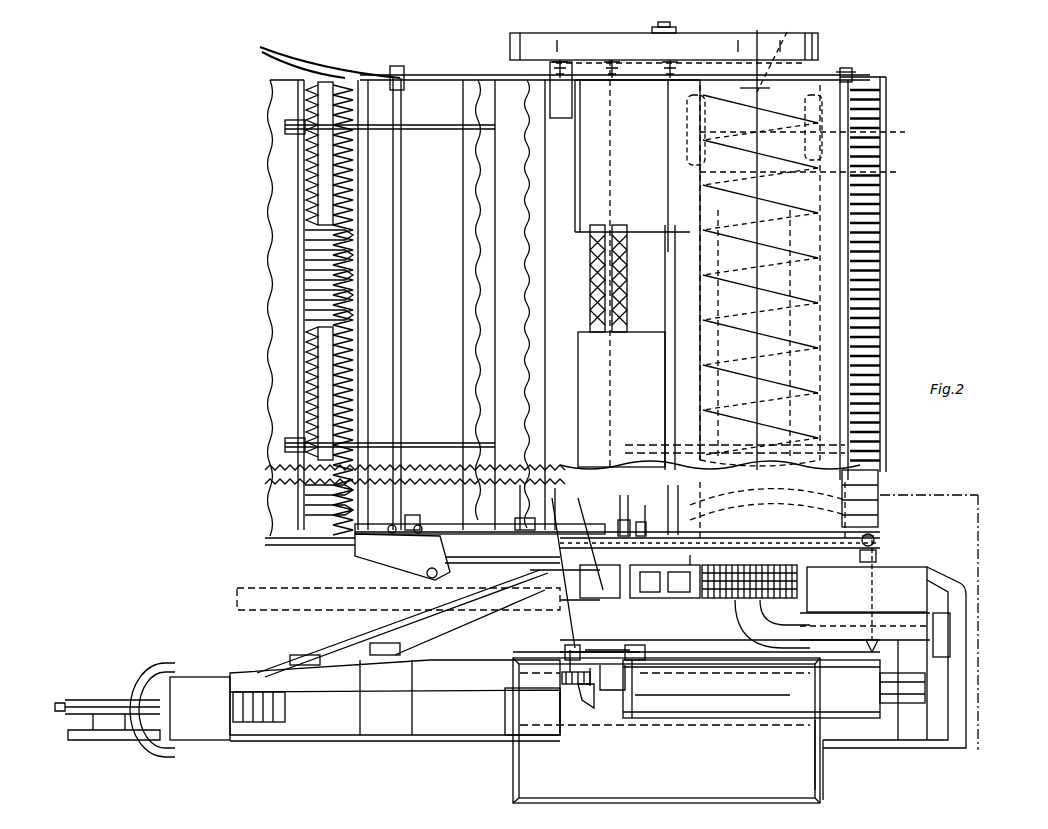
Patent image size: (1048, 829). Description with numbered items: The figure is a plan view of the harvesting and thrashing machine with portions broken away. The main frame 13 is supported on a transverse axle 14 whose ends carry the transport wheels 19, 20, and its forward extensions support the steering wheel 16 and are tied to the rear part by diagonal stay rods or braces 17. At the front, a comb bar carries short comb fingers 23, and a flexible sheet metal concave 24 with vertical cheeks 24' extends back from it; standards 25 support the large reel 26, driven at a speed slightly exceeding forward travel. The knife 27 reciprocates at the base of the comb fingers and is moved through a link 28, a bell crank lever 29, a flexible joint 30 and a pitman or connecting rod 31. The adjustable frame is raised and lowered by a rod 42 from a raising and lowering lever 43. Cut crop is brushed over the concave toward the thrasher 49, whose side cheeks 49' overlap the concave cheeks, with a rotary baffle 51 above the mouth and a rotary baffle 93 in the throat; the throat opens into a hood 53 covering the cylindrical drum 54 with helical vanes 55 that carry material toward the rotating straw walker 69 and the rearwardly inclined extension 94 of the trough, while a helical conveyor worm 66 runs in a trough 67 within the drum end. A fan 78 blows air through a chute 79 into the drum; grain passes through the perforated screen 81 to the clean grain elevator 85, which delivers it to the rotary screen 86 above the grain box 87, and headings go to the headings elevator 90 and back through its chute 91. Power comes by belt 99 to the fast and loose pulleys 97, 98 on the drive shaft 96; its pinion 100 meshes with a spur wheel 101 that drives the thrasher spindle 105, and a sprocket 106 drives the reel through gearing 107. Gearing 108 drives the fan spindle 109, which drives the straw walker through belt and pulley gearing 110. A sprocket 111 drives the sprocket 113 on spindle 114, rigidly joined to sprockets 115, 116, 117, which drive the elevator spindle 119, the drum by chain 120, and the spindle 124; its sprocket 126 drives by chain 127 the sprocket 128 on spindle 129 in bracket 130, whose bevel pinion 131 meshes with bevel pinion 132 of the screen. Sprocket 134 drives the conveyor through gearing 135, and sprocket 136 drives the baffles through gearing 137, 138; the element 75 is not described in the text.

The main frame 13 is at (474, 724).
The transverse axle 14 is at (664, 24).
The steering wheel 16 is at (133, 663).
The diagonal stay rods or braces 17 is at (356, 638).
The transport wheel 19 is at (504, 704).
The transport wheel 20 is at (512, 34).
The comb fingers 23 is at (290, 296).
The flexible sheet metal concave 24 is at (415, 305).
The vertical cheeks 24' is at (390, 287).
The standards 25 is at (388, 72).
The reel 26 is at (478, 204).
The knife 27 is at (356, 264).
The link 28 is at (355, 540).
The bell crank lever 29 is at (355, 562).
The two-way or flexible joint 30 is at (438, 571).
The pitman or connecting rod 31 is at (492, 562).
The rod 42 is at (385, 643).
The raising and lowering lever 43 is at (310, 655).
The thrasher 49 is at (710, 265).
The side cheeks 49' is at (615, 68).
The rotary baffle 51 is at (572, 128).
The hood 53 is at (754, 335).
The cylindrical drum 54 is at (760, 250).
The helical vanes 55 is at (684, 226).
The helical conveyor worm 66 is at (811, 173).
The trough 67 is at (814, 133).
The rotating straw walker 69 is at (880, 220).
The slot 75 is at (687, 127).
The fan 78 is at (950, 635).
The chute 79 is at (740, 616).
The cylindrical perforated screen 81 is at (798, 586).
The clean grain elevator 85 is at (865, 653).
The rotary screen 86 is at (774, 689).
The grain box 87 is at (666, 727).
The headings elevator 90 is at (720, 631).
The chute 91 is at (577, 573).
The rotary baffle 93 is at (610, 228).
The rearwardly inclined extension 94 is at (884, 90).
The drive shaft 96 is at (627, 517).
The fast belt pulley 97 is at (564, 572).
The loose belt pulley 98 is at (570, 606).
The belt 99 is at (260, 610).
The pinion 100 is at (645, 522).
The spur wheel 101 is at (522, 486).
The spindle of the thrasher drum 105 is at (626, 332).
The sprocket 106 is at (524, 520).
The chain and sprocket gearing 107 is at (414, 524).
The chain and sprocket gearing 108 is at (876, 556).
The fan spindle 109 is at (874, 540).
The belt and pulley gearing 110 is at (880, 520).
The sprocket 111 is at (558, 495).
The sprocket 113 is at (681, 592).
The spindle 114 is at (670, 490).
The sprocket 115 is at (653, 512).
The sprocket 116 is at (626, 495).
The sprocket 117 is at (665, 588).
The spindle 119 is at (868, 556).
The chain 120 is at (790, 504).
The spindle 124 is at (600, 588).
The sprocket 126 is at (638, 648).
The chain 127 is at (607, 636).
The sprocket 128 is at (565, 648).
The spindle 129 is at (562, 716).
The bracket 130 is at (562, 688).
The bevel pinion 131 is at (570, 694).
The bevel pinion 132 is at (594, 710).
The sprocket 134 is at (852, 72).
The chain and sprocket gearing 135 is at (771, 51).
The sprocket 136 is at (614, 62).
The chain and sprocket gearing 137 is at (552, 64).
The chain and sprocket gearing 138 is at (672, 62).